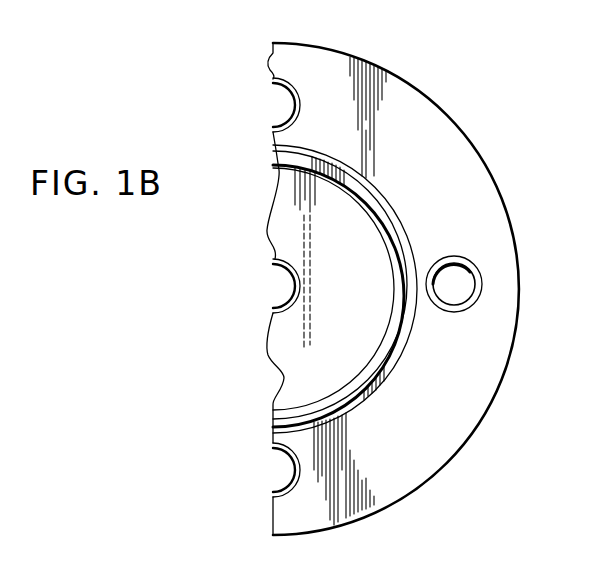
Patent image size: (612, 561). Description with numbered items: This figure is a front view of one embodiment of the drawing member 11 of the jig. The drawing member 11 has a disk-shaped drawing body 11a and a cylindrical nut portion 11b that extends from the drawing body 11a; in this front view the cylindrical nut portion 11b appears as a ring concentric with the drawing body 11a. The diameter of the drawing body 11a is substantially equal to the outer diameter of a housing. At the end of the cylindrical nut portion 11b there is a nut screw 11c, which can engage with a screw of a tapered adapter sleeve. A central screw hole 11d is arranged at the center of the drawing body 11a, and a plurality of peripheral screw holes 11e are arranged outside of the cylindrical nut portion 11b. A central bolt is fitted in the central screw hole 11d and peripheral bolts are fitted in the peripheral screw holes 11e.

The drawing member 11 is at (386, 289).
The drawing body 11a is at (476, 183).
The cylindrical nut portion 11b is at (369, 376).
The nut screw 11c is at (388, 232).
The central screw hole 11d is at (279, 303).
The peripheral screw holes 11e is at (480, 275).